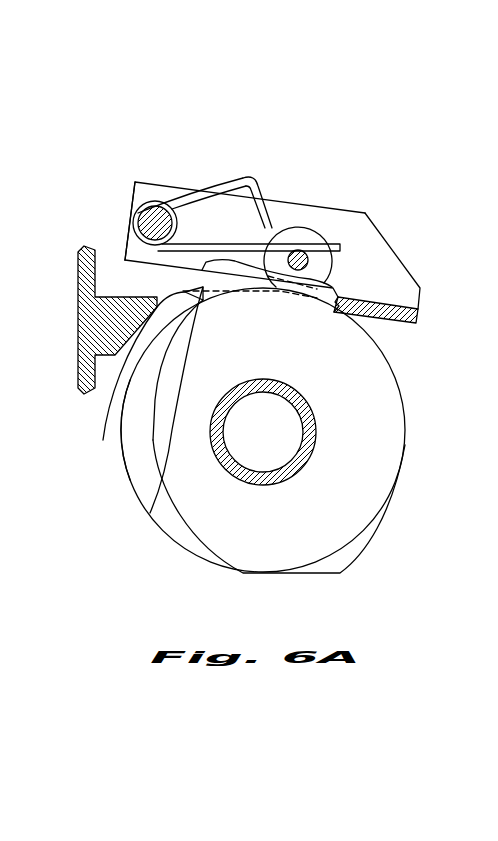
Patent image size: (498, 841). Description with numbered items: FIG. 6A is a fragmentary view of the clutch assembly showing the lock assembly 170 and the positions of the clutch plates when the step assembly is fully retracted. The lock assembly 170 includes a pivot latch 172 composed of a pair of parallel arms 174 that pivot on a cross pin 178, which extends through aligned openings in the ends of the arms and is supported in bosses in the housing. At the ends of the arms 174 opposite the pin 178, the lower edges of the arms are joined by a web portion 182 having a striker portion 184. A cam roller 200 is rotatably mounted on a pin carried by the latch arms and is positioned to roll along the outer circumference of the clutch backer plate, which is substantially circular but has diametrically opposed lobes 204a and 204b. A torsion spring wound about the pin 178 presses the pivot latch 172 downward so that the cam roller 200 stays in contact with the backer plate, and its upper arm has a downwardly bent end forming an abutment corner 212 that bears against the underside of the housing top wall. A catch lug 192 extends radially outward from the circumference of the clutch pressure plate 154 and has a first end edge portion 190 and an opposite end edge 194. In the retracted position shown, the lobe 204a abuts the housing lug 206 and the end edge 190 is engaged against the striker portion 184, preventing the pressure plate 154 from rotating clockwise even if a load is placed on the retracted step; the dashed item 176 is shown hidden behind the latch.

The clutch pressure plate 154 is at (328, 486).
The lock assembly 170 is at (390, 212).
The pivot latch 172 is at (342, 202).
The parallel arms 174 is at (225, 220).
The hidden support 176 is at (123, 256).
The cross pin 178 is at (150, 205).
The web portion 182 is at (417, 315).
The striker portion 184 is at (333, 312).
The end edge portion 190 is at (333, 288).
The catch lug 192 is at (237, 282).
The opposite end edge 194 is at (150, 513).
The cam roller 200 is at (193, 190).
The lobe 204a is at (128, 480).
The lobe 204b is at (360, 552).
The housing lug 206 is at (105, 436).
The abutment corner 212 is at (245, 177).